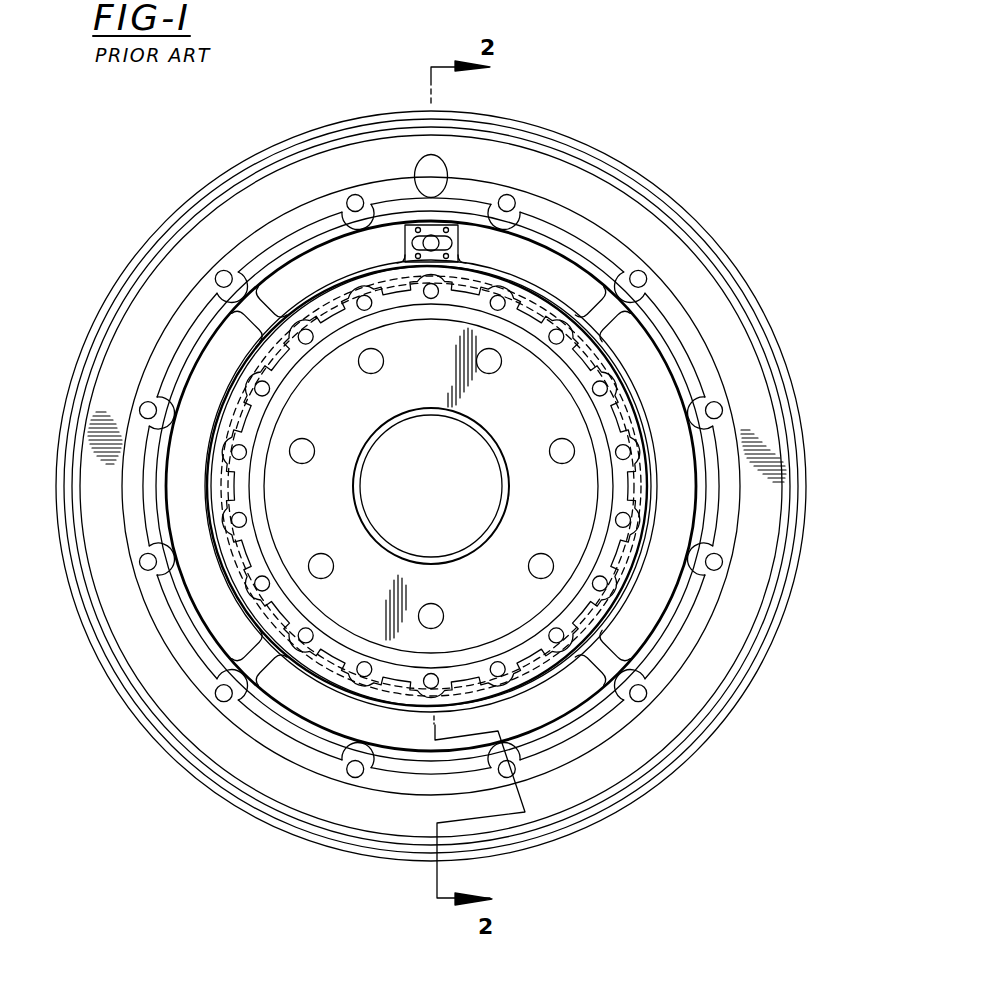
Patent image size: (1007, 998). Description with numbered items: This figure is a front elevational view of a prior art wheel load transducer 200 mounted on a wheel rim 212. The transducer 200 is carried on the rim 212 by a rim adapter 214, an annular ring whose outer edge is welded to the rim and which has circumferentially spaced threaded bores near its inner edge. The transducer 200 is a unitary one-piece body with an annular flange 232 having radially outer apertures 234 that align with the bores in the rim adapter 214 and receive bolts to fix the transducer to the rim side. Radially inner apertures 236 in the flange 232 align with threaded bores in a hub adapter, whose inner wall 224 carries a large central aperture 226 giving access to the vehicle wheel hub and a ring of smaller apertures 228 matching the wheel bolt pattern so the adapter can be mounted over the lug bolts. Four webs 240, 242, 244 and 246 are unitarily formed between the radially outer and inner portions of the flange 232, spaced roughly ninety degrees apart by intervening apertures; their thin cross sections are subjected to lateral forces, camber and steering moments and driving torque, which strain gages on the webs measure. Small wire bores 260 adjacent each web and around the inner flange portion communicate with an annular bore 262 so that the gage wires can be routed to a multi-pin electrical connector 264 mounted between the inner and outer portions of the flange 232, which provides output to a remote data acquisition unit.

The load transducer 200 is at (663, 306).
The wheel rim 212 is at (531, 124).
The rim adapter 214 is at (560, 181).
The inner wall 224 is at (292, 528).
The central aperture 226 is at (400, 425).
The apertures 228 is at (324, 568).
The annular flange 232 is at (694, 327).
The radially outer apertures 234 is at (716, 406).
The radially inner apertures 236 is at (626, 520).
The web 240 is at (603, 300).
The web 242 is at (620, 640).
The web 244 is at (264, 672).
The web 246 is at (272, 318).
The wire bores 260 is at (610, 412).
The annular bore 262 is at (548, 292).
The electrical connector 264 is at (393, 233).